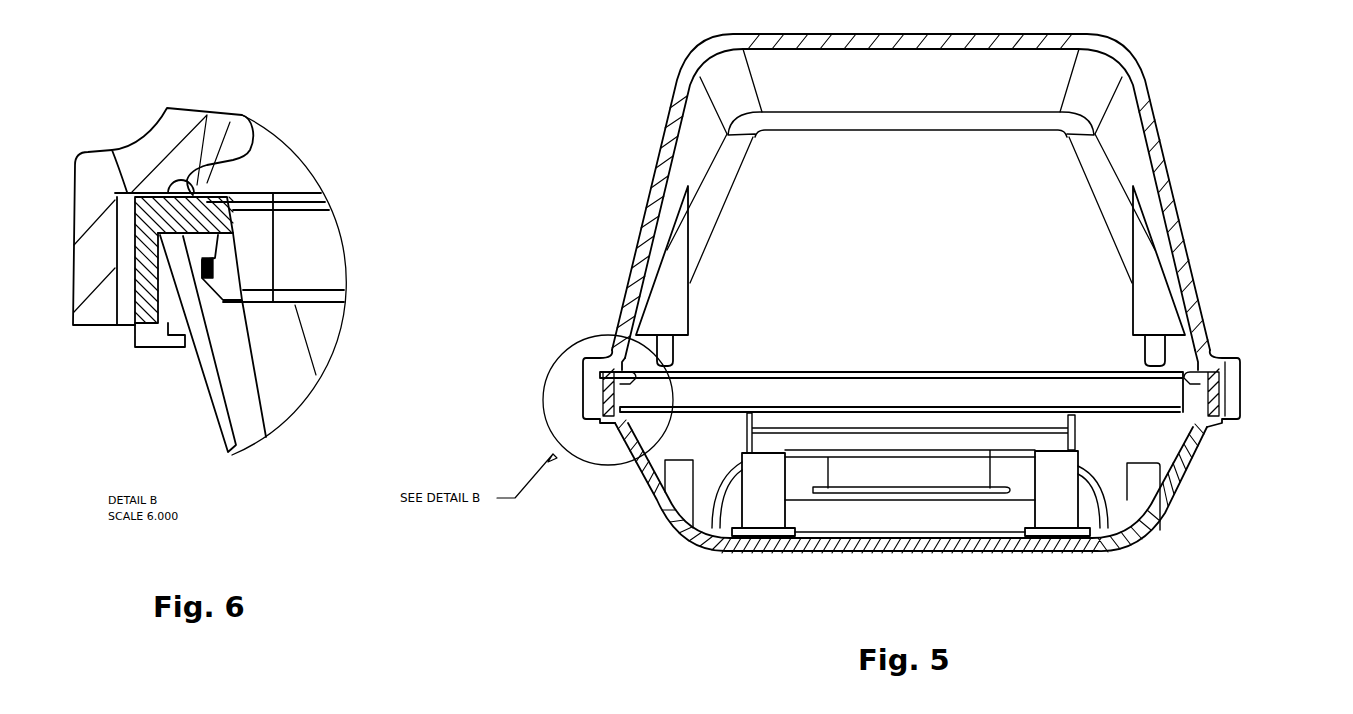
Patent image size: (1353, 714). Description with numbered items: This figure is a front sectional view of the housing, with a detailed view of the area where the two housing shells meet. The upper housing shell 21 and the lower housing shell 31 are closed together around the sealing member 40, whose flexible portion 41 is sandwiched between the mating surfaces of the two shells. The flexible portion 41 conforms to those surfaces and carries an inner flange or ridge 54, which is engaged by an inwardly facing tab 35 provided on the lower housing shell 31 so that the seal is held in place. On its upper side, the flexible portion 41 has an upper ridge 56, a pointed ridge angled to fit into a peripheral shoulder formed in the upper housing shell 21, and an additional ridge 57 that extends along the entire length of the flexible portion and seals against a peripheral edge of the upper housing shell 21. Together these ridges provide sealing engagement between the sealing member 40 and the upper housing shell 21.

In FIG. 5, the upper housing shell 21 is at (1163, 167).
In FIG. 6, the upper housing shell 21 is at (163, 128).
In FIG. 5, the lower housing shell 31 is at (641, 443).
In FIG. 6, the lower housing shell 31 is at (235, 392).
In FIG. 6, the inwardly facing tab 35 is at (233, 234).
In FIG. 5, the sealing member 40 is at (1216, 398).
In FIG. 6, the flexible portion 41 is at (141, 296).
In FIG. 6, the inner flange or ridge 54 is at (210, 272).
In FIG. 6, the upper ridge 56 is at (123, 190).
In FIG. 6, the additional ridge 57 is at (255, 136).